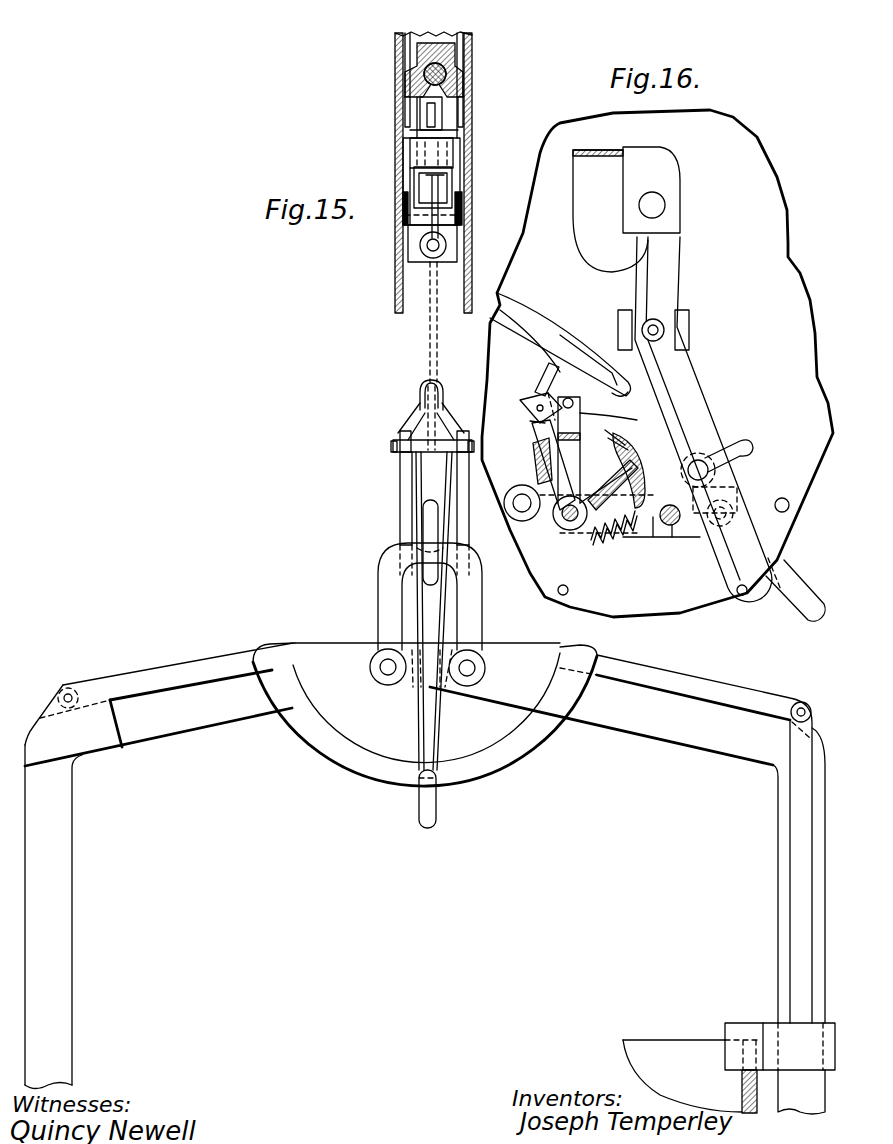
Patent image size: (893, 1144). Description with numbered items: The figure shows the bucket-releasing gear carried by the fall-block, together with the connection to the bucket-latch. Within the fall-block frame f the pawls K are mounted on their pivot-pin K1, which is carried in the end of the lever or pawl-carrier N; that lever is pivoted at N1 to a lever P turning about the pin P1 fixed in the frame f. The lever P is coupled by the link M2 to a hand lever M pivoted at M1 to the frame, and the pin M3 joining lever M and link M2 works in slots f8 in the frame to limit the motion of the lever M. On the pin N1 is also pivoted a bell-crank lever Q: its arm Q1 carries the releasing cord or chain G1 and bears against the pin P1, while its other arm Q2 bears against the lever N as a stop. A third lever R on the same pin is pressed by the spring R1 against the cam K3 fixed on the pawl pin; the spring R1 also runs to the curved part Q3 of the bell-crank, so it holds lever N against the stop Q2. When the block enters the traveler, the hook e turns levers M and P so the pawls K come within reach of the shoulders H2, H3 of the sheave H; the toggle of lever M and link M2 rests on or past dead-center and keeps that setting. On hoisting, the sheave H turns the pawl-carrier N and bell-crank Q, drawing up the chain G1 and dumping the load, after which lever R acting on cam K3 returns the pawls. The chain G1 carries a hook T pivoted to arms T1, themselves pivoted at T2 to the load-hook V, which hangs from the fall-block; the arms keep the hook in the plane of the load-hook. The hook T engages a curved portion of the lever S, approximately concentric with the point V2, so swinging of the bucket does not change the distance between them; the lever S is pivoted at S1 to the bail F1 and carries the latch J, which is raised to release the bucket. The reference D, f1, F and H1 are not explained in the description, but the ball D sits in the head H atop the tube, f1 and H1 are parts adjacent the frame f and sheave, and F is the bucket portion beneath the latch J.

In FIG. 15, the sheave H is at (421, 63).
In FIG. 16, the sheave H is at (560, 344).
In FIG. 15, the ball D is at (447, 67).
In FIG. 15, the pawls K is at (405, 102).
In FIG. 16, the pawls K is at (548, 384).
In FIG. 16, the pivot-pin K1 is at (537, 407).
In FIG. 15, the cam K3 is at (421, 122).
In FIG. 16, the cam K3 is at (530, 421).
In FIG. 15, the bell-crank lever Q is at (412, 186).
In FIG. 16, the bell-crank lever Q is at (597, 450).
In FIG. 16, the arm of bell-crank lever Q1 is at (629, 452).
In FIG. 15, the arm of bell-crank lever Q2 is at (420, 155).
In FIG. 16, the arm of bell-crank lever Q2 is at (533, 461).
In FIG. 16, the curved part of bell-crank lever Q3 is at (646, 482).
In FIG. 15, the lever R is at (436, 180).
In FIG. 16, the lever R is at (570, 502).
In FIG. 15, the spring R1 is at (430, 258).
In FIG. 16, the spring R1 is at (623, 542).
In FIG. 15, the lever or pawl-carrier N is at (418, 197).
In FIG. 16, the lever or pawl-carrier N is at (537, 428).
In FIG. 15, the pivot pin N1 is at (462, 202).
In FIG. 16, the pivot pin N1 is at (556, 524).
In FIG. 15, the lever P is at (405, 215).
In FIG. 16, the lever P is at (661, 539).
In FIG. 16, the pin P1 is at (672, 533).
In FIG. 15, the fall-block frame f is at (396, 251).
In FIG. 16, the fall-block frame f is at (657, 363).
In FIG. 16, the block f1 is at (675, 197).
In FIG. 16, the slots f8 is at (747, 447).
In FIG. 16, the load-suspending hook e is at (610, 211).
In FIG. 15, the releasing cord or chain G1 is at (430, 344).
In FIG. 16, the releasing cord or chain G1 is at (631, 442).
In FIG. 15, the hook T is at (402, 483).
In FIG. 15, the arms T1 is at (405, 425).
In FIG. 15, the pivot T2 is at (421, 398).
In FIG. 15, the load-hook V is at (434, 611).
In FIG. 15, the point V2 is at (420, 551).
In FIG. 15, the lever S is at (190, 667).
In FIG. 15, the pivot S1 is at (69, 694).
In FIG. 15, the plate F is at (682, 1076).
In FIG. 15, the bail F1 is at (425, 900).
In FIG. 15, the latch J is at (738, 1027).
In FIG. 16, the lever M is at (730, 429).
In FIG. 16, the pivot M1 is at (665, 329).
In FIG. 16, the link M2 is at (728, 501).
In FIG. 16, the pin M3 is at (700, 462).
In FIG. 16, the blade H1 is at (541, 357).
In FIG. 16, the shoulder of sheave H2 is at (607, 405).
In FIG. 16, the shoulder of sheave H3 is at (588, 360).